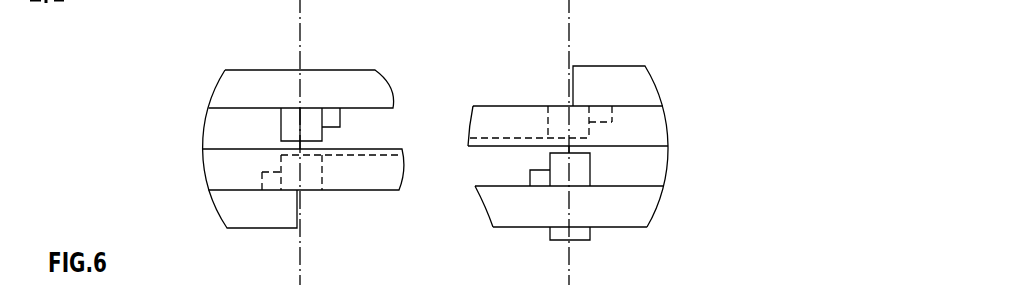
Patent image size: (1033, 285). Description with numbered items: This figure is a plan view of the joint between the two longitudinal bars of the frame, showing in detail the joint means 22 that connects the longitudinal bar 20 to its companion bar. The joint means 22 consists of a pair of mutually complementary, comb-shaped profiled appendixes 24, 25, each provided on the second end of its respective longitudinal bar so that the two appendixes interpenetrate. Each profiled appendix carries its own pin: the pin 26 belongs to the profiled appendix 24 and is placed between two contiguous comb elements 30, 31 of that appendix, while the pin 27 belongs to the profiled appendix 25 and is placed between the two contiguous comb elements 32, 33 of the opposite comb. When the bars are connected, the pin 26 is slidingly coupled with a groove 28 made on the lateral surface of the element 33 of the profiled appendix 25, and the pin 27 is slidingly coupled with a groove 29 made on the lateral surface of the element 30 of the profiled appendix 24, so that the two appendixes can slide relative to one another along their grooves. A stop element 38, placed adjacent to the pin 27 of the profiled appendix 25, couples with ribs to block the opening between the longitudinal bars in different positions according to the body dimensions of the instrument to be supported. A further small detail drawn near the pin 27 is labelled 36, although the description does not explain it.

The longitudinal bar 20 is at (337, 142).
The joint means 22 is at (733, 76).
The profiled appendix 24 is at (241, 202).
The profiled appendix 25 is at (648, 92).
The pin 26 is at (290, 124).
The pin 27 is at (578, 165).
The groove 28 is at (493, 99).
The groove 29 is at (387, 190).
The comb element 30 is at (263, 163).
The comb element 31 is at (373, 94).
The comb element 32 is at (497, 201).
The comb element 33 is at (605, 133).
The key 36 is at (542, 175).
The stop element 38 is at (597, 256).